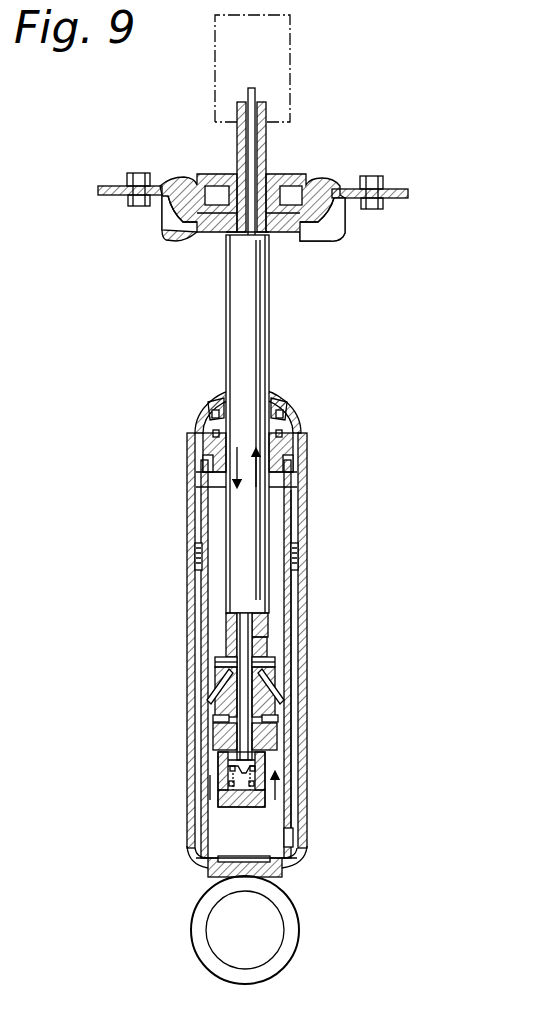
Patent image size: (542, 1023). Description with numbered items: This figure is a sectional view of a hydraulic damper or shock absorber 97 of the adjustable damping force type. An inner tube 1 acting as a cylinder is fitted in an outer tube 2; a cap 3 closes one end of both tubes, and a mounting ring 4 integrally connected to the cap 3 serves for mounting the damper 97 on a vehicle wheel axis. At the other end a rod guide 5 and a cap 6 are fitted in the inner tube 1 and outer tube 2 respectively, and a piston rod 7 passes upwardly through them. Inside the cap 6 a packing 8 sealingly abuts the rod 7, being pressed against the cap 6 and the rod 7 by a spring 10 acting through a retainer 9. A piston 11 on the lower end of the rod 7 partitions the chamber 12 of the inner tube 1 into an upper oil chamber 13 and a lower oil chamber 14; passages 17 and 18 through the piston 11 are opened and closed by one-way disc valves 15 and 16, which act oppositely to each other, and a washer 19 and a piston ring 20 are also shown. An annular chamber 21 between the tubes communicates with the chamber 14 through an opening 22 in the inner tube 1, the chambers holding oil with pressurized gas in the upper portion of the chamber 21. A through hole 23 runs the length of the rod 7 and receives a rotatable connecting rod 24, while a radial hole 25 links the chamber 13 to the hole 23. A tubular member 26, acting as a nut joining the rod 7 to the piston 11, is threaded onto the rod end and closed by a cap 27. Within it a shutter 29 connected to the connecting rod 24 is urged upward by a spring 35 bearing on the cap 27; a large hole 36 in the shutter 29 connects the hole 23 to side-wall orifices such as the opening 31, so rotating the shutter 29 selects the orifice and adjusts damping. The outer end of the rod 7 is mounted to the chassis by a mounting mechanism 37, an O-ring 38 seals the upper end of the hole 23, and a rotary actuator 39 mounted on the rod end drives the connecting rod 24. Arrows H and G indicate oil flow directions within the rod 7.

The inner tube 1 is at (203, 519).
The outer tube 2 is at (190, 553).
The cap 3 is at (192, 858).
The mounting ring 4 is at (203, 905).
The rod guide 5 is at (283, 435).
The cap 6 is at (274, 396).
The piston rod 7 is at (268, 300).
The packing 8 is at (215, 400).
The retainer 9 is at (211, 412).
The spring 10 is at (206, 425).
The piston 11 is at (207, 708).
The chamber 12 is at (215, 570).
The oil chamber 13 is at (277, 558).
The oil chamber 14 is at (273, 852).
The one-way valve 15 is at (280, 658).
The one-way valve 16 is at (215, 720).
The passage 17 is at (273, 710).
The passage 18 is at (213, 683).
The washer 19 is at (220, 655).
The piston ring 20 is at (277, 697).
The annular chamber 21 is at (298, 521).
The opening 22 is at (292, 838).
The through hole 23 is at (230, 627).
The connecting rod 24 is at (247, 613).
The radial hole 25 is at (263, 640).
The tubular member 26 is at (222, 737).
The cap 27 is at (239, 831).
The shutter 29 is at (250, 764).
The opening 31 is at (263, 773).
The spring 35 is at (230, 767).
The hole 36 is at (240, 765).
The mounting mechanism 37 is at (212, 233).
The O-ring 38 is at (262, 116).
The rotary actuator 39 is at (292, 95).
The hydraulic damper 97 is at (348, 399).
The flow arrow H is at (235, 483).
The flow arrow G is at (265, 484).